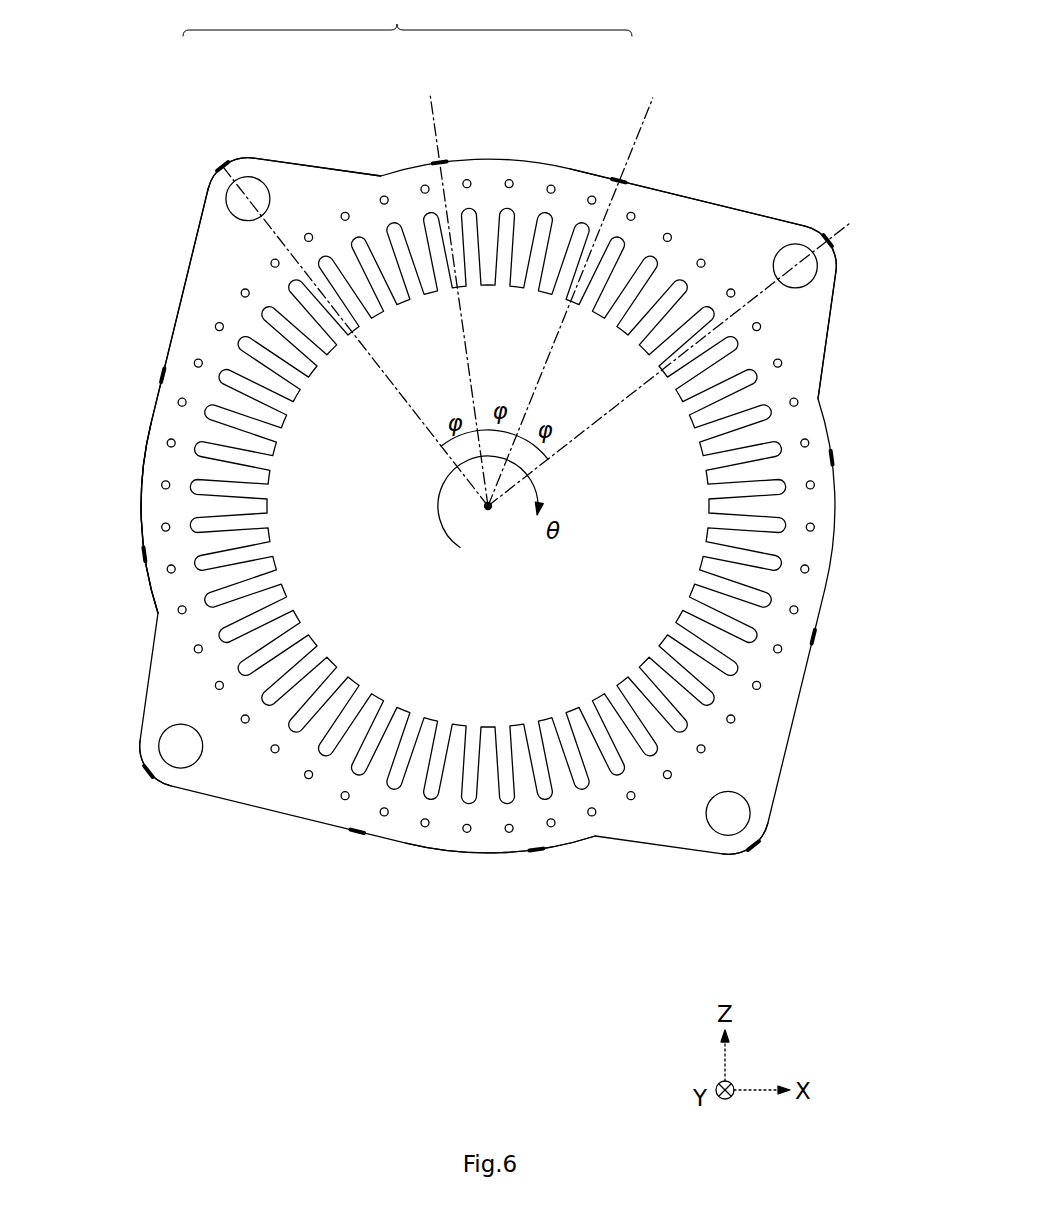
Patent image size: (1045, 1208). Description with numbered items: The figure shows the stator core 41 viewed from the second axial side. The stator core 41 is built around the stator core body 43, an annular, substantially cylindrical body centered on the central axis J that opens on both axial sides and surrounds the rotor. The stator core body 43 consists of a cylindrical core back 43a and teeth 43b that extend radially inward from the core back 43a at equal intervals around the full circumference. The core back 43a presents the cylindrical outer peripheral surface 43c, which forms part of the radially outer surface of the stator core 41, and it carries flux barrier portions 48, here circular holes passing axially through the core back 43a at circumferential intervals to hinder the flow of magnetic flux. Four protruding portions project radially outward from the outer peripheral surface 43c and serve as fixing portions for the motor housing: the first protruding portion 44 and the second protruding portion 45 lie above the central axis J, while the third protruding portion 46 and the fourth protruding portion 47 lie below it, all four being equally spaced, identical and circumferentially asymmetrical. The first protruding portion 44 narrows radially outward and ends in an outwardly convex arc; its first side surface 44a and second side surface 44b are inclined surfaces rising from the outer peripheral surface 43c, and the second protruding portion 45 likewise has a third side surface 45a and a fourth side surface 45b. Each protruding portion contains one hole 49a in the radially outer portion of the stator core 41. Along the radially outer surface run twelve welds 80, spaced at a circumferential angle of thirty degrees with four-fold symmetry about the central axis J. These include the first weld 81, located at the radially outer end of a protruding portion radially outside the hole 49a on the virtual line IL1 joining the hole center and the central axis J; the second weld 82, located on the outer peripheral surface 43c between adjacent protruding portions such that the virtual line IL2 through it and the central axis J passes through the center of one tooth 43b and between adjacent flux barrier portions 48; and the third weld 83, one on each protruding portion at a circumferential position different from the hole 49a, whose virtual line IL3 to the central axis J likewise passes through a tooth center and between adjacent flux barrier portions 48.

The stator core 41 is at (758, 143).
The stator core body 43 is at (114, 518).
The core back 43a is at (160, 498).
The teeth 43b is at (455, 284).
The outer peripheral surface 43c is at (470, 855).
The first protruding portion 44 is at (803, 318).
The first side surface 44a is at (710, 201).
The second side surface 44b is at (825, 351).
The second protruding portion 45 is at (210, 247).
The third side surface 45a is at (345, 170).
The fourth side surface 45b is at (188, 268).
The third protruding portion 46 is at (230, 781).
The fourth protruding portion 47 is at (771, 762).
The flux barrier portions 48 is at (276, 259).
The hole 49a is at (243, 196).
The weld 80 is at (407, 18).
The first weld 81 is at (221, 160).
The second weld 82 is at (438, 160).
The third weld 83 is at (619, 178).
The virtual line IL1 is at (219, 161).
The virtual line IL2 is at (440, 101).
The virtual line IL3 is at (658, 101).
The central axis J is at (489, 510).